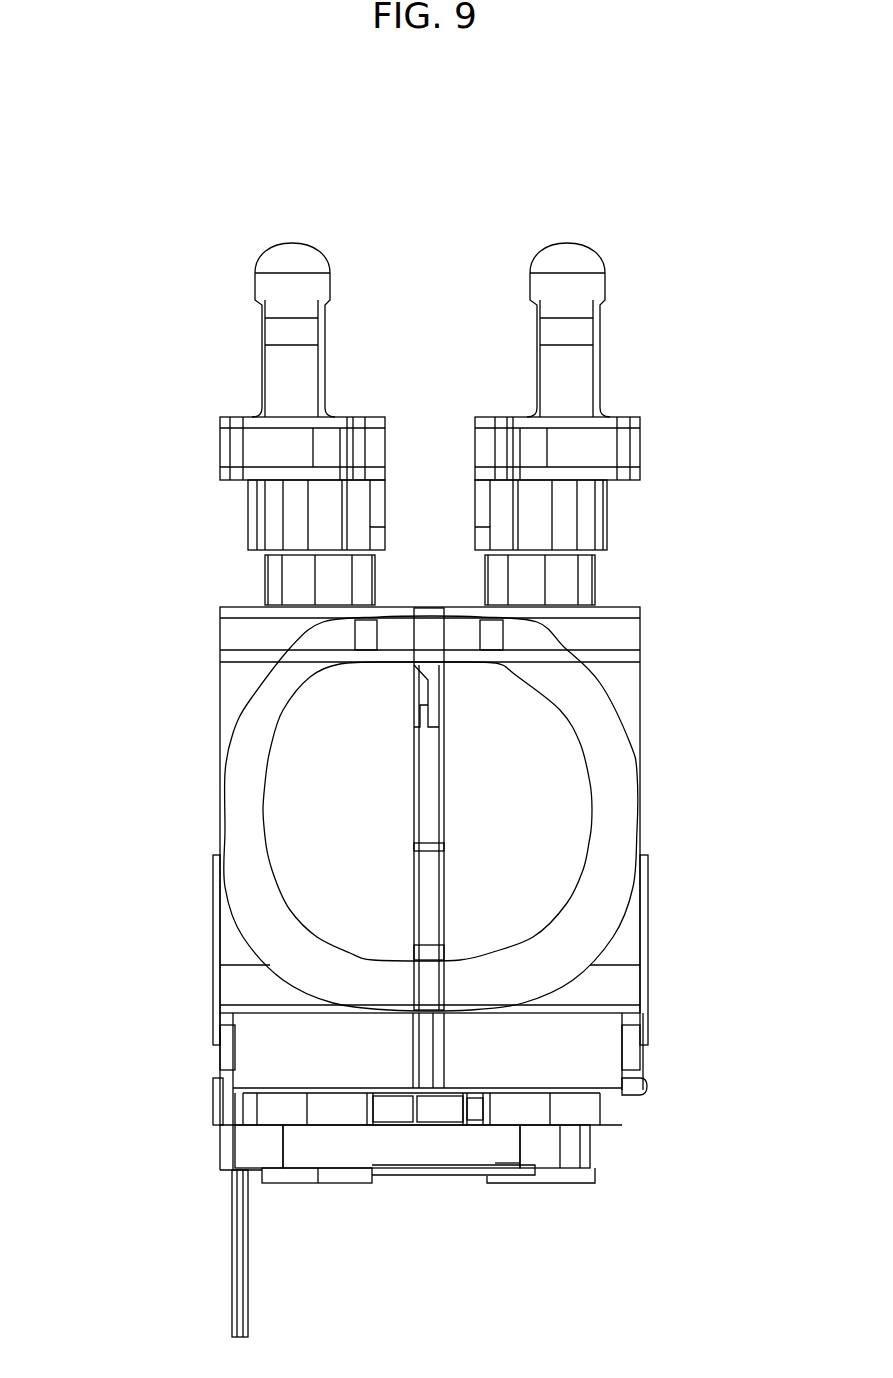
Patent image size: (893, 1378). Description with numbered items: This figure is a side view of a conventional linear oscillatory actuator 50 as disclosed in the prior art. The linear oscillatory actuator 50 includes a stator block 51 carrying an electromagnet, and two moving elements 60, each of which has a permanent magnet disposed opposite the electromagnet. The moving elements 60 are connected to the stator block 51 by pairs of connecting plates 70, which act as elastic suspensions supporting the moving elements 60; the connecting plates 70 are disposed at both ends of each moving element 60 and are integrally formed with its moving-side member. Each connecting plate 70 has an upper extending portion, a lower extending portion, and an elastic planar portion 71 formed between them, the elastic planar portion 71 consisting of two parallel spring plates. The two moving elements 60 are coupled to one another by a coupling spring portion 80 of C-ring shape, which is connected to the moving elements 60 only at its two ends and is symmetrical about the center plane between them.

The linear oscillatory actuator 50 is at (167, 262).
The stator block 51 is at (423, 1172).
The moving element 60 is at (240, 607).
The connecting plate 70 is at (220, 670).
The elastic planar portion 71 is at (228, 710).
The coupling spring portion 80 is at (614, 808).